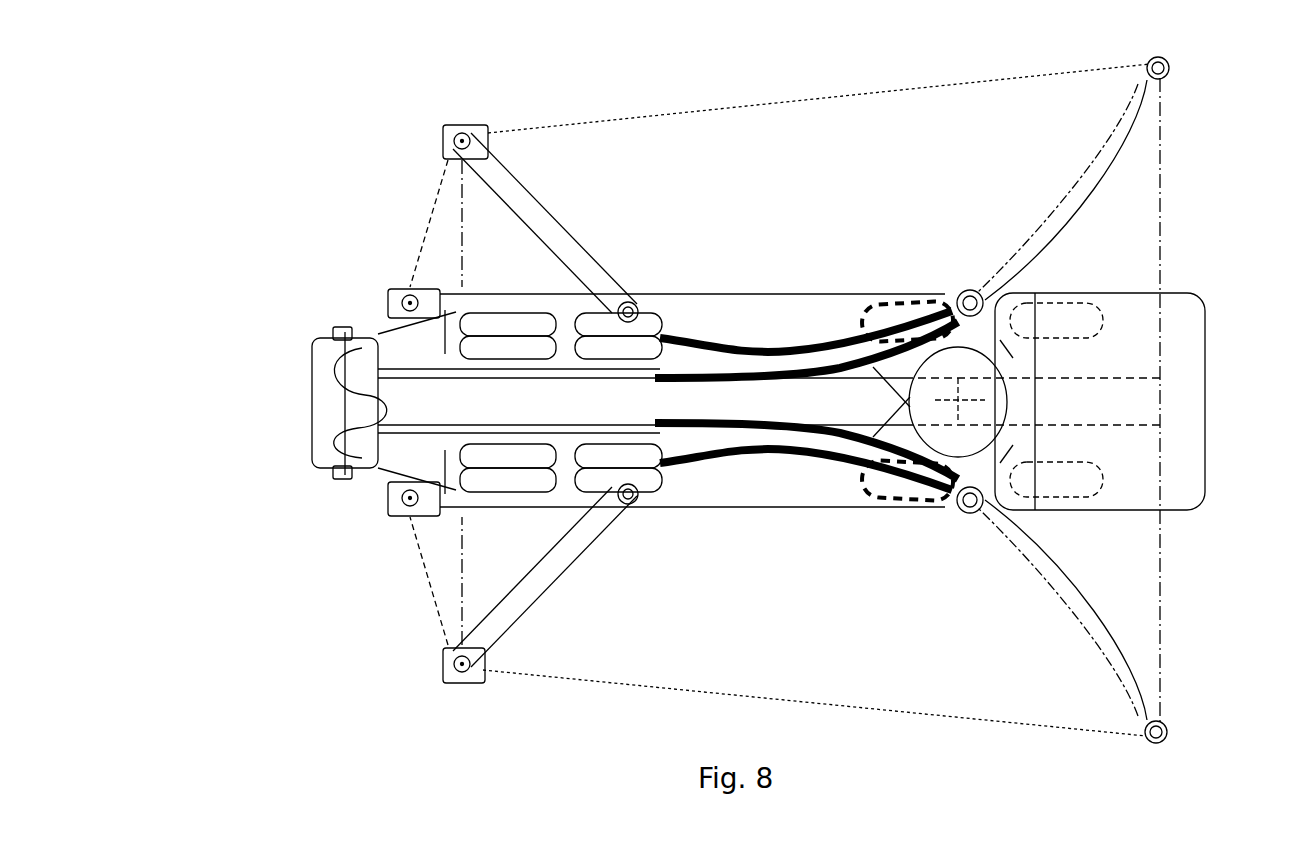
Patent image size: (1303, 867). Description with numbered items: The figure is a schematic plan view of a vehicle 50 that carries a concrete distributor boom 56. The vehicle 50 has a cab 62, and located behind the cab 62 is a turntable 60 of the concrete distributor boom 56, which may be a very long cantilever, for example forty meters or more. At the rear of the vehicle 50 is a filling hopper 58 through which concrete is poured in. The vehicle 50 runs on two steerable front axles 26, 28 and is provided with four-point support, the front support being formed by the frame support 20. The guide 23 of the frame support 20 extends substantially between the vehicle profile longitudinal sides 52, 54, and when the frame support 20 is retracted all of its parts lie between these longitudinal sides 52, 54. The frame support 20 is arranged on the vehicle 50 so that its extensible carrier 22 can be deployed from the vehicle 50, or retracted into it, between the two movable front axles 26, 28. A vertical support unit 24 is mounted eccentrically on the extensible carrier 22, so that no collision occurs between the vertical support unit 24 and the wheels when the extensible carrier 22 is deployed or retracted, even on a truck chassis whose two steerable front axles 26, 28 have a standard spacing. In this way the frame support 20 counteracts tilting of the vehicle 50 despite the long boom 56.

The frame support 20 is at (1044, 156).
The extensible carrier 22 is at (1017, 262).
The guide 23 is at (797, 350).
The vertical support unit 24 is at (1146, 62).
The steerable front axle 26 is at (1075, 485).
The steerable front axle 28 is at (905, 508).
The vehicle 50 is at (285, 190).
The vehicle profile longitudinal side 52 is at (757, 294).
The vehicle profile longitudinal side 54 is at (745, 509).
The concrete distributor boom 56 is at (487, 412).
The filling hopper 58 is at (320, 410).
The turntable 60 is at (968, 432).
The cab 62 is at (1140, 425).